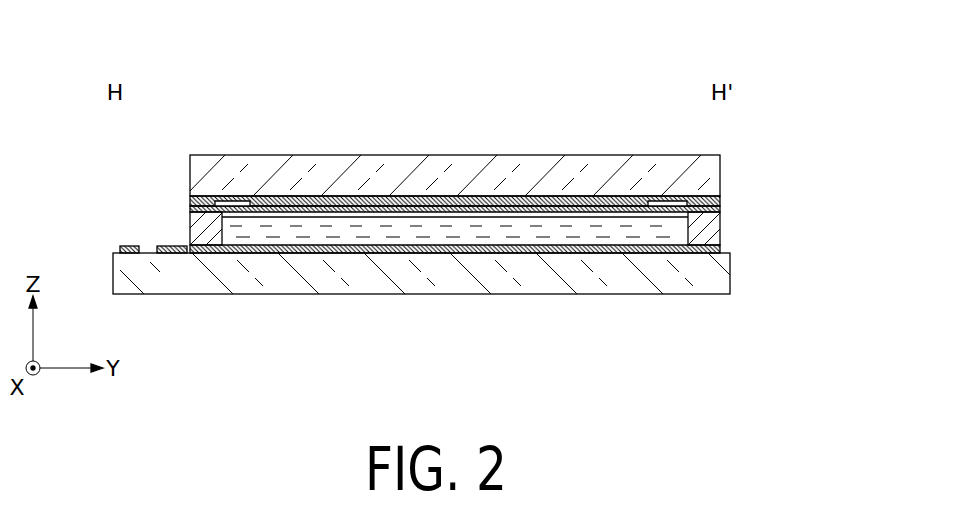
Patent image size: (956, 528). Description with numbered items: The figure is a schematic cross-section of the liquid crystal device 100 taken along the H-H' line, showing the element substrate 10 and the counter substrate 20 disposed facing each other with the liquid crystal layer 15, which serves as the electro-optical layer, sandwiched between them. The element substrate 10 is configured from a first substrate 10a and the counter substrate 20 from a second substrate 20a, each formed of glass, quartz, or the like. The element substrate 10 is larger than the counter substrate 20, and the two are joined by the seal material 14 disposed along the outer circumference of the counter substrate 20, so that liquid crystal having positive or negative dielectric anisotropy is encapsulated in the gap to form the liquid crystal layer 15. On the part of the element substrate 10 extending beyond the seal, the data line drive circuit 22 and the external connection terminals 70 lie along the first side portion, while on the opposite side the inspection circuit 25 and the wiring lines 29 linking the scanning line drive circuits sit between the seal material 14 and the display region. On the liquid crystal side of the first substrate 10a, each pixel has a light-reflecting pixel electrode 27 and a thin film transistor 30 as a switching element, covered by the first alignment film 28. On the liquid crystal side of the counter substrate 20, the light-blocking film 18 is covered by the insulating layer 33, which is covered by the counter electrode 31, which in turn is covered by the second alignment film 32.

The liquid crystal device 100 is at (610, 72).
The element substrate 10 is at (812, 248).
The first substrate 10a is at (730, 268).
The counter substrate 20 is at (812, 153).
The second substrate 20a is at (720, 180).
The seal material 14 is at (720, 213).
The liquid crystal layer 15 is at (720, 240).
The light-blocking film 18 is at (233, 200).
The data line drive circuit 22 is at (175, 245).
The external connection terminals 70 is at (130, 245).
The inspection circuit 25 is at (650, 250).
The pixel electrode 27 is at (413, 252).
The first alignment film 28 is at (470, 250).
The wiring lines 29 is at (688, 250).
The transistor 30 is at (413, 252).
The counter electrode 31 is at (609, 208).
The second alignment film 32 is at (504, 226).
The insulating layer 33 is at (433, 202).